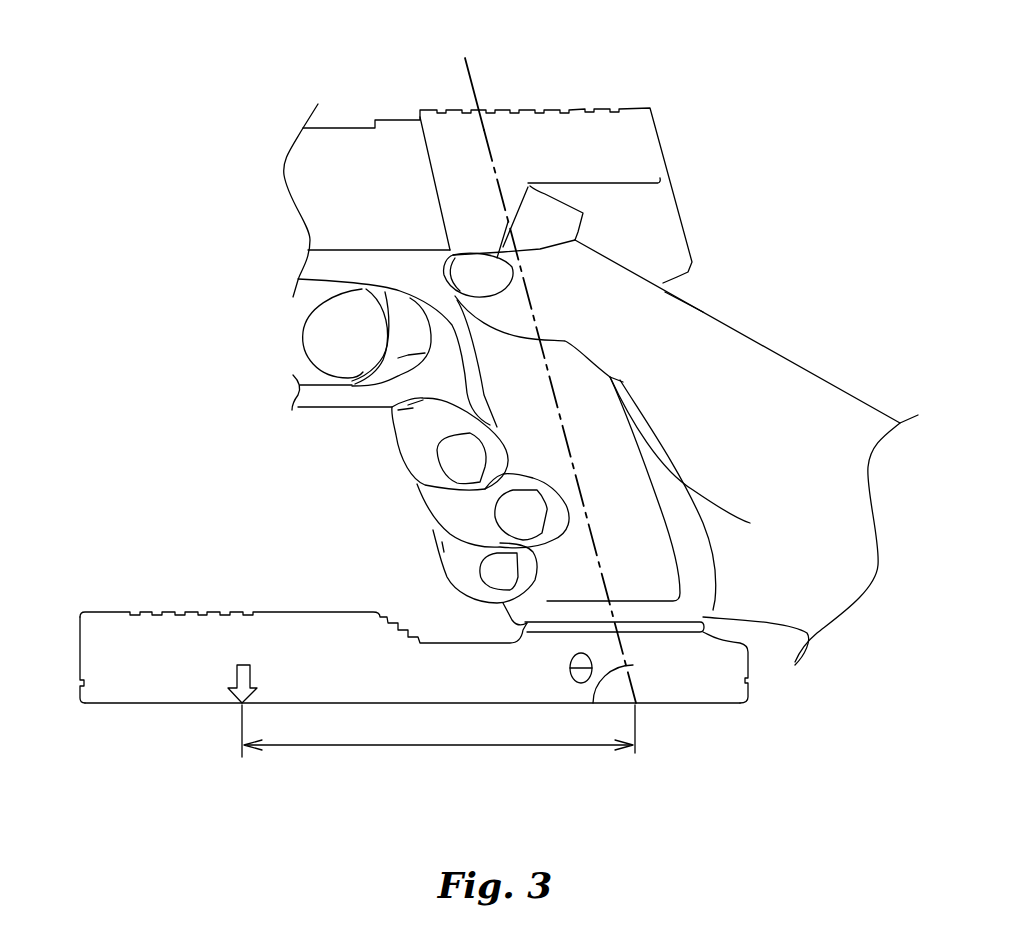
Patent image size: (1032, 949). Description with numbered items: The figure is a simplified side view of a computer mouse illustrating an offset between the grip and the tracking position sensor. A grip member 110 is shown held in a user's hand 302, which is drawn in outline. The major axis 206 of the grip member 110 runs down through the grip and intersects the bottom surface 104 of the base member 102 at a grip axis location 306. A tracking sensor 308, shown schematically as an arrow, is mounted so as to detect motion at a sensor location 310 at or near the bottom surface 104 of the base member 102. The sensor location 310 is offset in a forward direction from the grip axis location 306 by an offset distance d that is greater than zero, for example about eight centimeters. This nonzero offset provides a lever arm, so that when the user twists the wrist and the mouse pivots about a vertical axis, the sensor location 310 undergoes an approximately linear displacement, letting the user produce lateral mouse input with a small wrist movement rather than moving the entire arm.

The base member 102 is at (333, 623).
The bottom surface 104 is at (110, 720).
The grip member 110 is at (620, 483).
The major axis 206 is at (472, 70).
The user's hand 302 is at (745, 345).
The grip axis location 306 is at (638, 707).
The tracking sensor 308 is at (237, 670).
The sensor location 310 is at (240, 707).